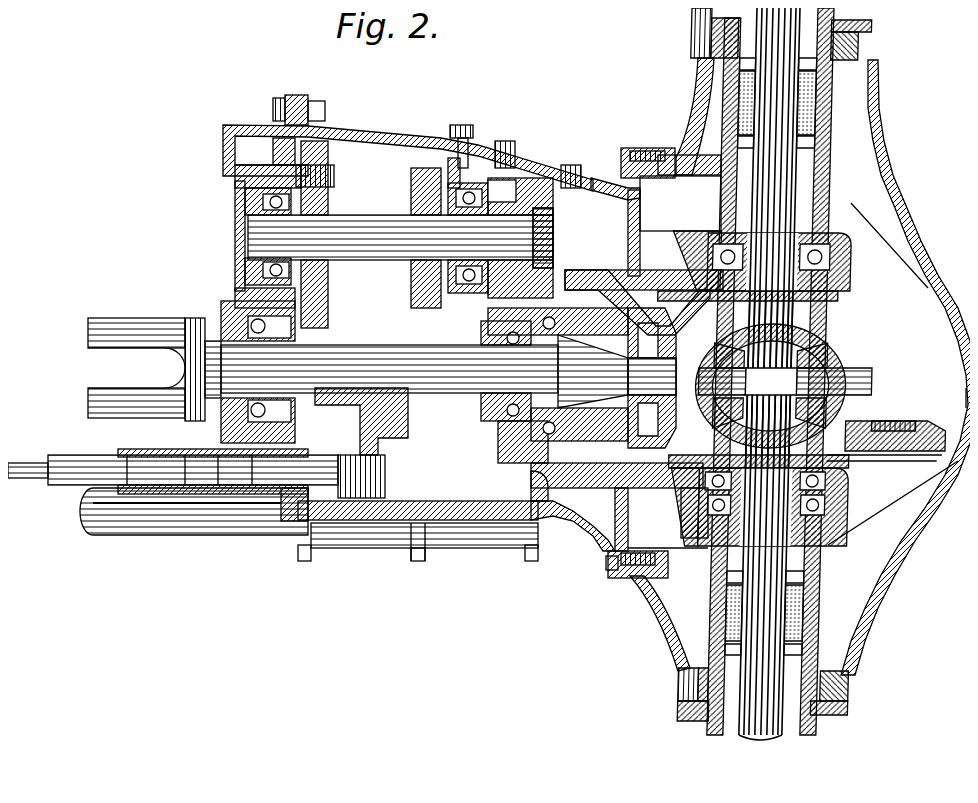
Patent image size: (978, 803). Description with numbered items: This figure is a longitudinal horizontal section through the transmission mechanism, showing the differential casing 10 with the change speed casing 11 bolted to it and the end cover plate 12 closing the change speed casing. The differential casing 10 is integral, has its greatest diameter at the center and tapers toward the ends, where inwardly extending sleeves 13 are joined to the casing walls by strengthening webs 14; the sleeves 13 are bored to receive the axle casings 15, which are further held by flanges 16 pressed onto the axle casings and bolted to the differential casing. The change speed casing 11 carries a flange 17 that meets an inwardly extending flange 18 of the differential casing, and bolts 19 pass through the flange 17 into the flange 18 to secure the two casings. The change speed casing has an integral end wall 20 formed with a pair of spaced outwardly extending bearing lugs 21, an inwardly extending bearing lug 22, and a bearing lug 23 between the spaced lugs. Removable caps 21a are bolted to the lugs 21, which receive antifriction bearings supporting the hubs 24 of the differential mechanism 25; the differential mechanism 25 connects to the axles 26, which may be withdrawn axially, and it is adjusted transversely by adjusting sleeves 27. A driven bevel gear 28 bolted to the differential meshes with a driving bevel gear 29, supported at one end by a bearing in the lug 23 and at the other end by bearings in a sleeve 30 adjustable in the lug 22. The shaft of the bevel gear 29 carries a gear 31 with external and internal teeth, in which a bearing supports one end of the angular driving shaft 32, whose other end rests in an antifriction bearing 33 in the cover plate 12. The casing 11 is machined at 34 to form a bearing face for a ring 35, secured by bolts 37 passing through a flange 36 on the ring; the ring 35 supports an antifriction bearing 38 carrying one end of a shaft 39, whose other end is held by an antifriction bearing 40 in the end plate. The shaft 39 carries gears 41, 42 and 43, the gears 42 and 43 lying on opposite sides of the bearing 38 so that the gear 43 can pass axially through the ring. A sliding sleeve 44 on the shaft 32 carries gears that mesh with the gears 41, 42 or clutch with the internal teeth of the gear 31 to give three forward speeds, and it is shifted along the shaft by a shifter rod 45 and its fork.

The differential casing 10 is at (958, 393).
The change speed casing 11 is at (375, 125).
The end cover plate 12 is at (265, 108).
The inwardly extending sleeves 13 is at (855, 130).
The strengthening webs 14 is at (688, 108).
The axle casings 15 is at (858, 55).
The flanges 16 is at (864, 20).
The flange 17 is at (620, 568).
The inwardly extending flange 18 is at (648, 170).
The bolts 19 is at (598, 558).
The end wall 20 is at (620, 218).
The spaced bearing lugs 21 is at (683, 225).
The removable caps 21a is at (849, 262).
The bearing lug 22 is at (580, 262).
The bearing lug 23 is at (660, 330).
The hubs 24 is at (798, 215).
The differential mechanism 25 is at (852, 340).
The axles 26 is at (792, 192).
The adjusting sleeves 27 is at (826, 297).
The driven bevel gear 28 is at (915, 415).
The driving bevel gear 29 is at (575, 432).
The sleeve 30 is at (525, 447).
The gear 31 is at (480, 445).
The angular driving shaft 32 is at (432, 386).
The antifriction bearing 33 is at (215, 300).
The machined bearing face 34 is at (492, 138).
The ring 35 is at (455, 302).
The flange 36 is at (440, 147).
The bolts 37 is at (455, 118).
The antifriction bearing 38 is at (540, 152).
The shaft 39 is at (370, 207).
The antifriction bearing 40 is at (232, 192).
The gear 41 is at (322, 288).
The gear 42 is at (430, 303).
The gear 43 is at (508, 186).
The sliding sleeve 44 is at (400, 420).
The shifter rod 45 is at (55, 482).